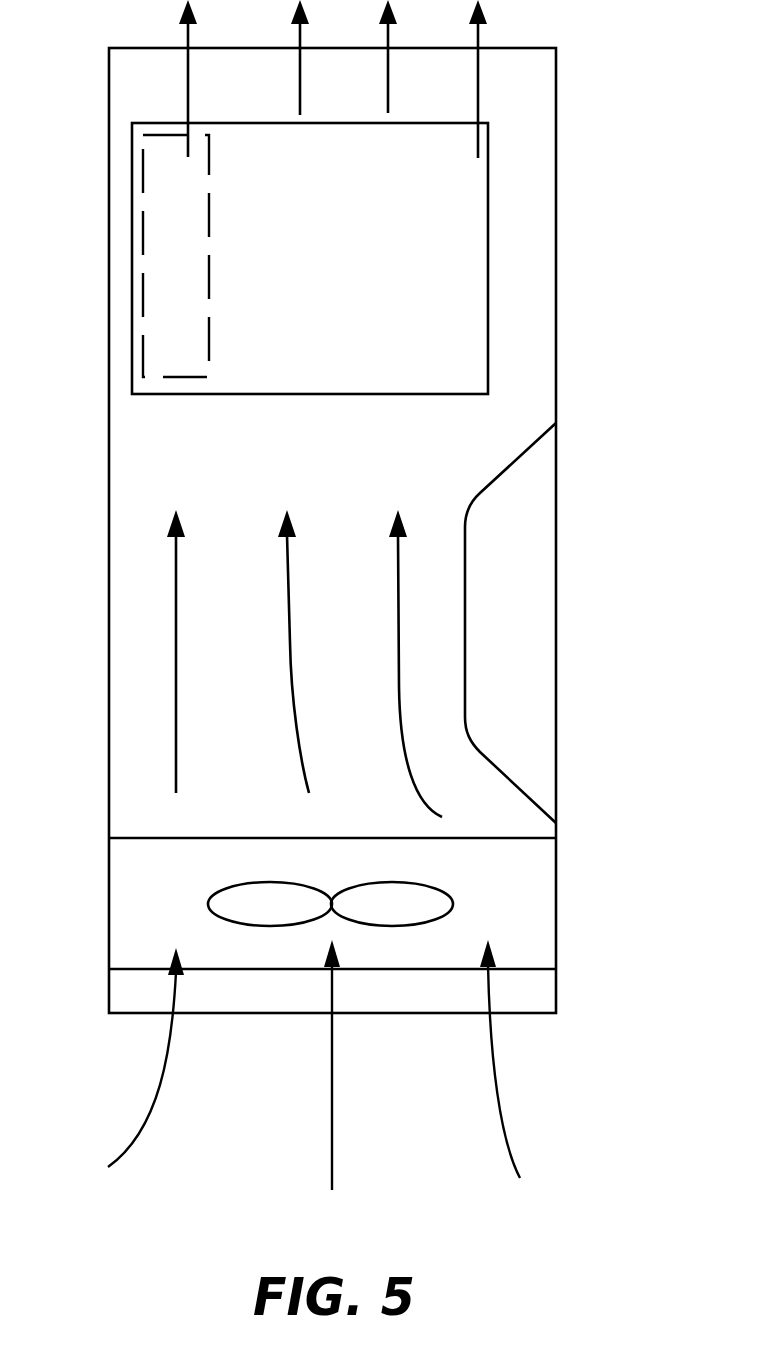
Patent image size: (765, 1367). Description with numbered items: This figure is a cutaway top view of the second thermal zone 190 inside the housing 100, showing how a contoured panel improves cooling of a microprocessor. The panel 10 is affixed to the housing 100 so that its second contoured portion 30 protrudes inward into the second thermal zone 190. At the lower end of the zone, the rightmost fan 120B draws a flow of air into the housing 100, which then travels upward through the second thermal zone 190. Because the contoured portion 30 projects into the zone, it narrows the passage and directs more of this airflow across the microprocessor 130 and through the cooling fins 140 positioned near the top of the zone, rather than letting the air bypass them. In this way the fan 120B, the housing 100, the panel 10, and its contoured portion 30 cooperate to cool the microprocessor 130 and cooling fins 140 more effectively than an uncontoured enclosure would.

The panel 10 is at (556, 550).
The second contoured portion 30 is at (466, 646).
The housing 100 is at (109, 870).
The rightmost fan 120B is at (294, 898).
The microprocessor 130 is at (176, 256).
The cooling fins 140 is at (310, 258).
The second thermal zone 190 is at (304, 644).